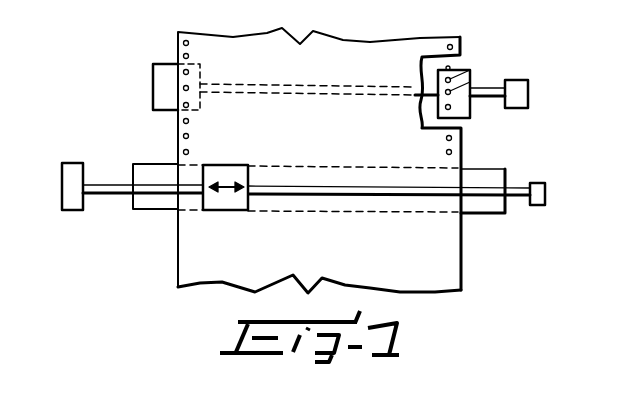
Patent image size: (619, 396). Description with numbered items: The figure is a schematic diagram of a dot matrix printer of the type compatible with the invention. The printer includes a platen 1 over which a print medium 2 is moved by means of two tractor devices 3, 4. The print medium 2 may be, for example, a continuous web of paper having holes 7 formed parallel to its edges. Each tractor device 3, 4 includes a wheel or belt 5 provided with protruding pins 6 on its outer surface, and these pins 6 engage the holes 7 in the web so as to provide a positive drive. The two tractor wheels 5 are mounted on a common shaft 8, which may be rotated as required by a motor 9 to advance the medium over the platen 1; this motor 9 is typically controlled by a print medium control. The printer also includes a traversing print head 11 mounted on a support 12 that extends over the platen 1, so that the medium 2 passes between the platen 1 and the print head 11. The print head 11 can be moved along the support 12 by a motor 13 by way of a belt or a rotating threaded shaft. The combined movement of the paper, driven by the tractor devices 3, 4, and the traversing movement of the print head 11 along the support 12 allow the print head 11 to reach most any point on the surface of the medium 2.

The platen 1 is at (488, 180).
The print medium 2 is at (433, 268).
The tractor device 3 is at (498, 87).
The tractor device 4 is at (126, 46).
The wheel or belt 5 is at (156, 82).
The pins 6 is at (468, 77).
The holes 7 is at (184, 122).
The common shaft 8 is at (494, 32).
The motor 9 is at (522, 93).
The print head 11 is at (229, 207).
The support 12 is at (528, 198).
The motor 13 is at (80, 199).